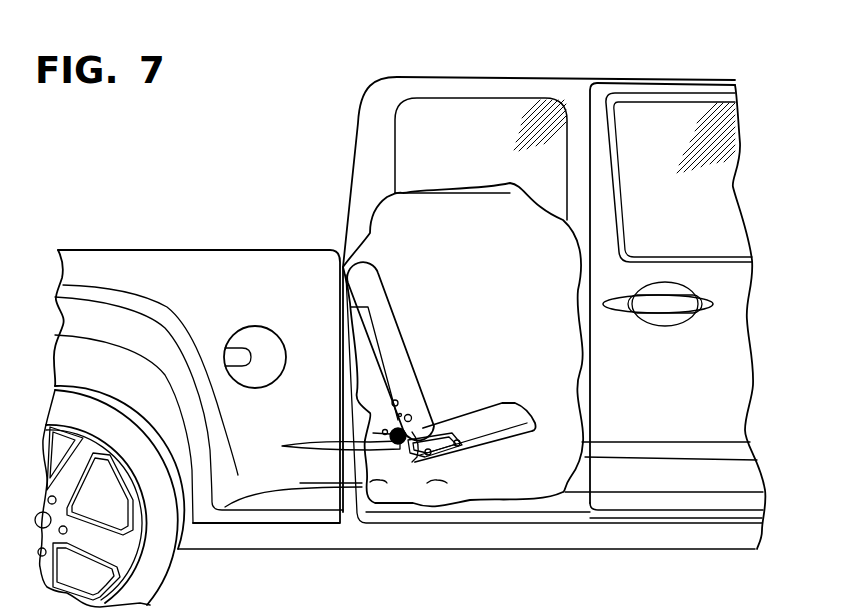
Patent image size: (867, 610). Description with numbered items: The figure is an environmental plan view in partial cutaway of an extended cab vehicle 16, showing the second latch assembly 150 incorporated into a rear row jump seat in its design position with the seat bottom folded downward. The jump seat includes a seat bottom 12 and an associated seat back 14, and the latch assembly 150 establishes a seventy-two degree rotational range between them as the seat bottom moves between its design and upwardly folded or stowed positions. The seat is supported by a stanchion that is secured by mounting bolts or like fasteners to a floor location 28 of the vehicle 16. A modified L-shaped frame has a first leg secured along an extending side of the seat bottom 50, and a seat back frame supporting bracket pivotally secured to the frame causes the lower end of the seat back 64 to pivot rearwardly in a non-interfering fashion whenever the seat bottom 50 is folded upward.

The extended cab vehicle 16 is at (480, 77).
The seat back 14 is at (373, 293).
The seat back 64 is at (370, 347).
The latch assembly 150 is at (442, 409).
The seat bottom 12 is at (515, 408).
The seat bottom 50 is at (510, 430).
The floor location 28 is at (446, 480).